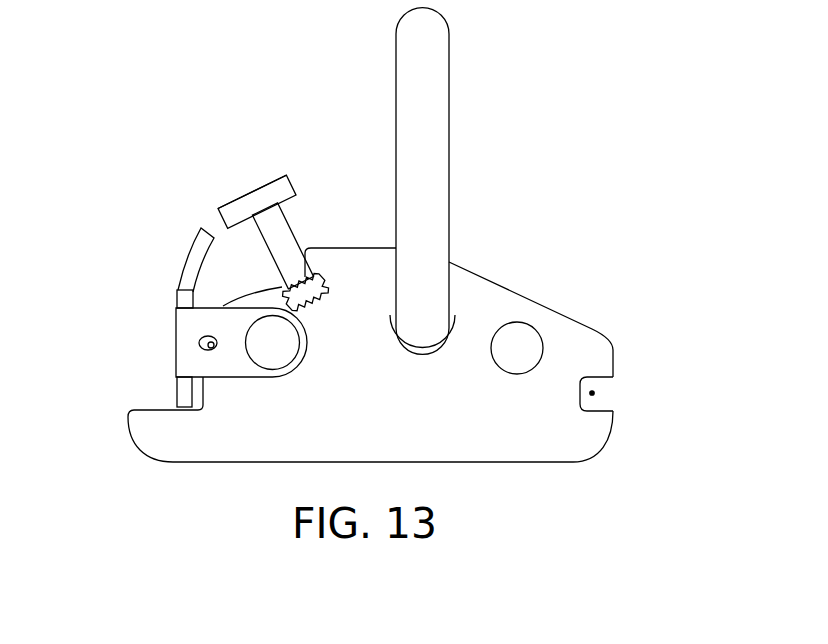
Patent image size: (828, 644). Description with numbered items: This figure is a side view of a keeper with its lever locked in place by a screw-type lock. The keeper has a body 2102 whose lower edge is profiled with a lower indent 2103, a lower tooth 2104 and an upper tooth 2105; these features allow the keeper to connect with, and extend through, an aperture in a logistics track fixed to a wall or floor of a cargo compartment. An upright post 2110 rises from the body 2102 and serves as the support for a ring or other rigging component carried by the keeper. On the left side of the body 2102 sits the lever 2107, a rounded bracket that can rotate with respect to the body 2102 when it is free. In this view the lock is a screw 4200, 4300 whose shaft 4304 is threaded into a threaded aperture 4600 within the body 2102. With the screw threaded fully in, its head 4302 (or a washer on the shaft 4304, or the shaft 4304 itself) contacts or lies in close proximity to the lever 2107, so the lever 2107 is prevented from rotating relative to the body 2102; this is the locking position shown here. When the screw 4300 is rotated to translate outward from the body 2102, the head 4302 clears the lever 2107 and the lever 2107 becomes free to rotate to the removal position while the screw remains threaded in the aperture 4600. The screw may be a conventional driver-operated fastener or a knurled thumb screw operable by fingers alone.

The body 2102 is at (245, 443).
The lower indent 2103 is at (598, 393).
The lower tooth 2104 is at (580, 438).
The upper tooth 2105 is at (142, 431).
The lever 2107 is at (185, 358).
The upright post 2110 is at (443, 178).
The screw 4200 is at (278, 232).
The screw 4300 is at (261, 228).
The head 4302 is at (272, 183).
The shaft 4304 is at (278, 250).
The threaded aperture 4600 is at (327, 287).